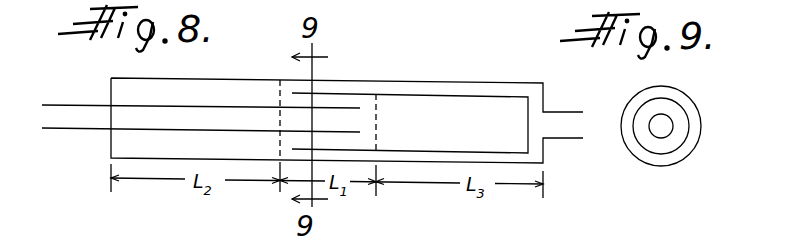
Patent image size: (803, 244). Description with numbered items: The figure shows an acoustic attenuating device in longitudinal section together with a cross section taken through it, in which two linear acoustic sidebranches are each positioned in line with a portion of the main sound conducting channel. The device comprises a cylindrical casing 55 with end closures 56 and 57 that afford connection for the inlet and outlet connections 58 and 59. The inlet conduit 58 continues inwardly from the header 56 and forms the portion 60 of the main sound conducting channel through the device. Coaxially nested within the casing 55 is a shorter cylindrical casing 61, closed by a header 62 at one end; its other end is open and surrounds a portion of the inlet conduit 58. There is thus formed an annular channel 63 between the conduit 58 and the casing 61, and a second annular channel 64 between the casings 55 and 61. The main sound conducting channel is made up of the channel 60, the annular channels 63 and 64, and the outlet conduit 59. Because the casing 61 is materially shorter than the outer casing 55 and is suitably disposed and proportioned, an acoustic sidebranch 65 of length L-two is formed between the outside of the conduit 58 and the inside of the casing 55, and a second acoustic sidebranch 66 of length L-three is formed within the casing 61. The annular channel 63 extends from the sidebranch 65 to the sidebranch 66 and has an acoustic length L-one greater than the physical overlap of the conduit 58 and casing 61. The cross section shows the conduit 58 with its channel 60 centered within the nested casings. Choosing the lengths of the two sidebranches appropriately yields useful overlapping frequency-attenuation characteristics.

In FIG. 8, the cylindrical casing 55 is at (442, 81).
In FIG. 9, the cylindrical casing 55 is at (682, 86).
In FIG. 8, the end closure 56 is at (111, 88).
In FIG. 8, the end closure 57 is at (544, 92).
In FIG. 8, the inlet conduit 58 is at (55, 131).
In FIG. 9, the inlet conduit 58 is at (675, 135).
In FIG. 8, the outlet conduit 59 is at (573, 138).
In FIG. 8, the portion of the main sound conducting channel 60 is at (228, 120).
In FIG. 9, the portion of the main sound conducting channel 60 is at (658, 128).
In FIG. 8, the cylindrical casing 61 is at (478, 94).
In FIG. 8, the header 62 is at (530, 155).
In FIG. 8, the annular channel 63 is at (325, 103).
In FIG. 8, the annular channel 64 is at (400, 90).
In FIG. 8, the acoustic sidebranch 65 is at (173, 93).
In FIG. 8, the acoustic sidebranch 66 is at (410, 123).